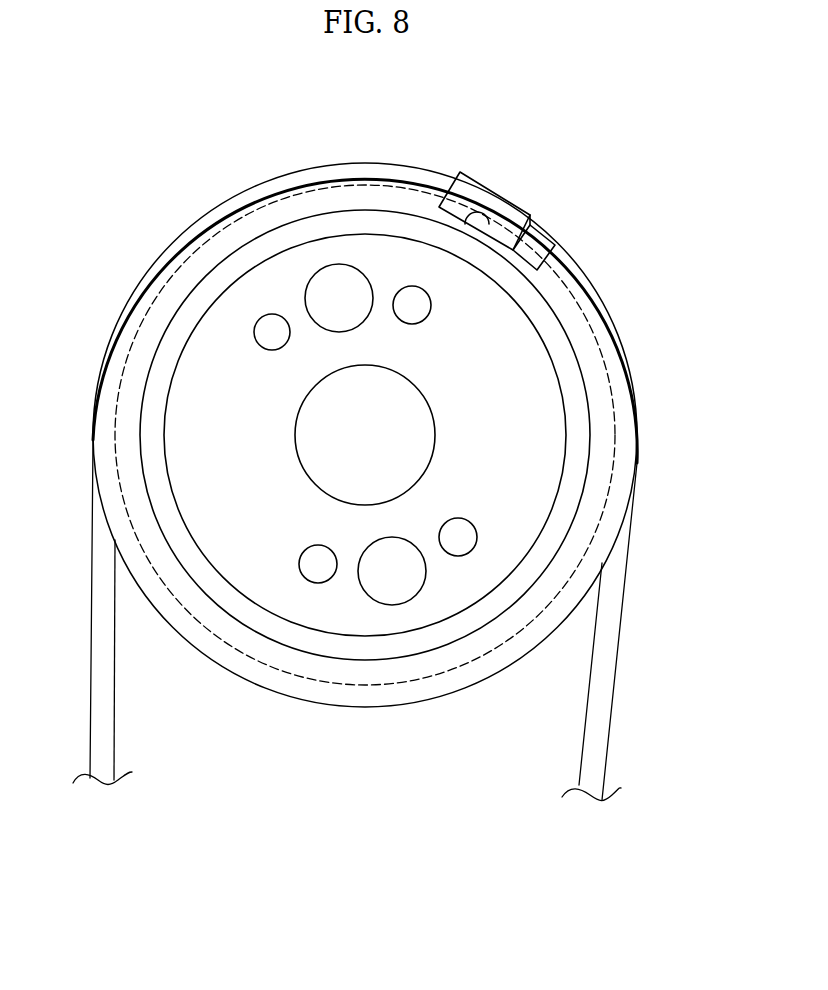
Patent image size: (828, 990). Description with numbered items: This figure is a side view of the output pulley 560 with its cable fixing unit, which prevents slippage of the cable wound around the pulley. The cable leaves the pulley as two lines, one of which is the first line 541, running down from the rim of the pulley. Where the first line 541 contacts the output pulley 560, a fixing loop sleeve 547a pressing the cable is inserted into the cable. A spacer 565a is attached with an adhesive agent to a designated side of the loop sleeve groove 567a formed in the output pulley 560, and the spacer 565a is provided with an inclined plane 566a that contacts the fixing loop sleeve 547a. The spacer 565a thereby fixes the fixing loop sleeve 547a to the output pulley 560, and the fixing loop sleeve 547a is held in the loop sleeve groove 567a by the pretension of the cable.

The output pulley 560 is at (345, 709).
The first line 541 is at (605, 698).
The fixing loop sleeve 547a is at (493, 203).
The spacer 565a is at (545, 240).
The inclined plane 566a is at (524, 215).
The loop sleeve groove 567a is at (488, 243).